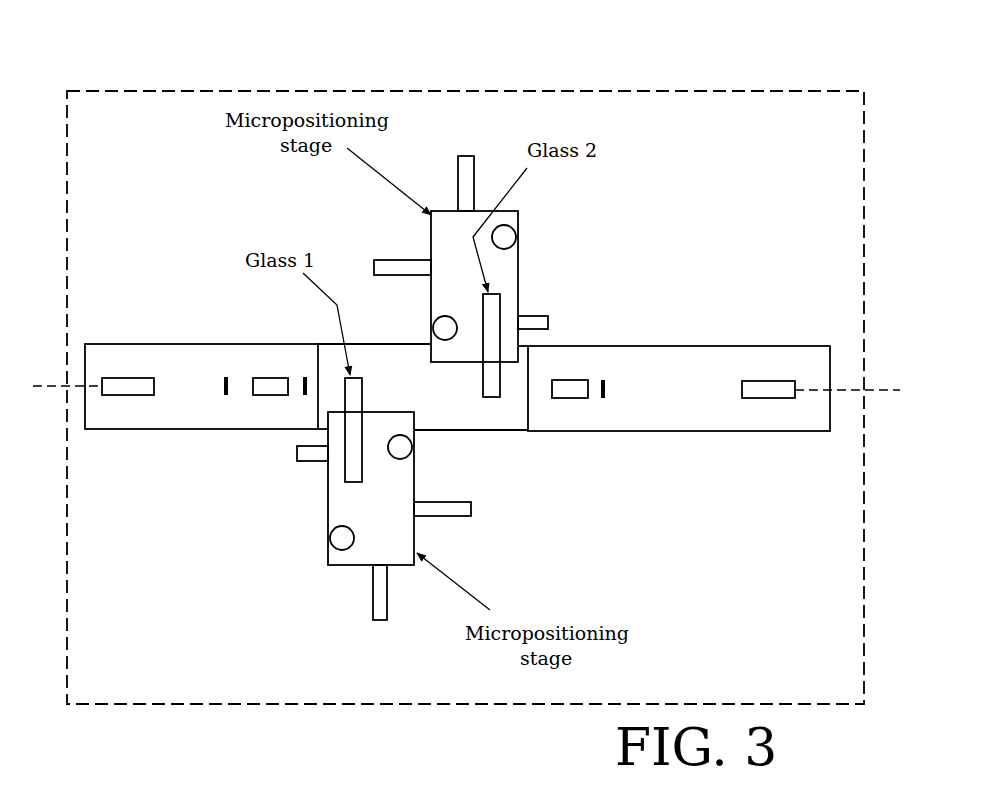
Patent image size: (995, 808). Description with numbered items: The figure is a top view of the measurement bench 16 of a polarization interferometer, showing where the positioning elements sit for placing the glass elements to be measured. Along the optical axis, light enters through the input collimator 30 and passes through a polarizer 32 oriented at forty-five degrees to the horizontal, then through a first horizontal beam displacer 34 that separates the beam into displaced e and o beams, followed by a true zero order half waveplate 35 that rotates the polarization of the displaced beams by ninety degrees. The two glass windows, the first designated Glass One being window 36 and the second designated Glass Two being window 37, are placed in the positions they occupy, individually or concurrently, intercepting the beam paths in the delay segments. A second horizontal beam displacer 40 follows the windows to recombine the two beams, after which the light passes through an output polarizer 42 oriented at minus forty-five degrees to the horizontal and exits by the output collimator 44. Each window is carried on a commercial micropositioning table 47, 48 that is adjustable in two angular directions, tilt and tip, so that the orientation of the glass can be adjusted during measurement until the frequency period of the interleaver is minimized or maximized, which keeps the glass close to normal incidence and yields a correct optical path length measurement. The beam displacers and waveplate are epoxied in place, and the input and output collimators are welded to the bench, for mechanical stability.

The measurement bench 16 is at (408, 90).
The input collimator 30 is at (132, 378).
The polarizer 32 is at (225, 377).
The first horizontal beam displacer 34 is at (273, 378).
The true zero order half waveplate 35 is at (304, 400).
The window (Glass 1) 36 is at (363, 390).
The window (Glass 2) 37 is at (493, 307).
The second horizontal beam displacer 40 is at (570, 398).
The output polarizer 42 is at (610, 391).
The output collimator 44 is at (765, 380).
The micropositioning table 47 is at (327, 557).
The micropositioning table 48 is at (518, 220).